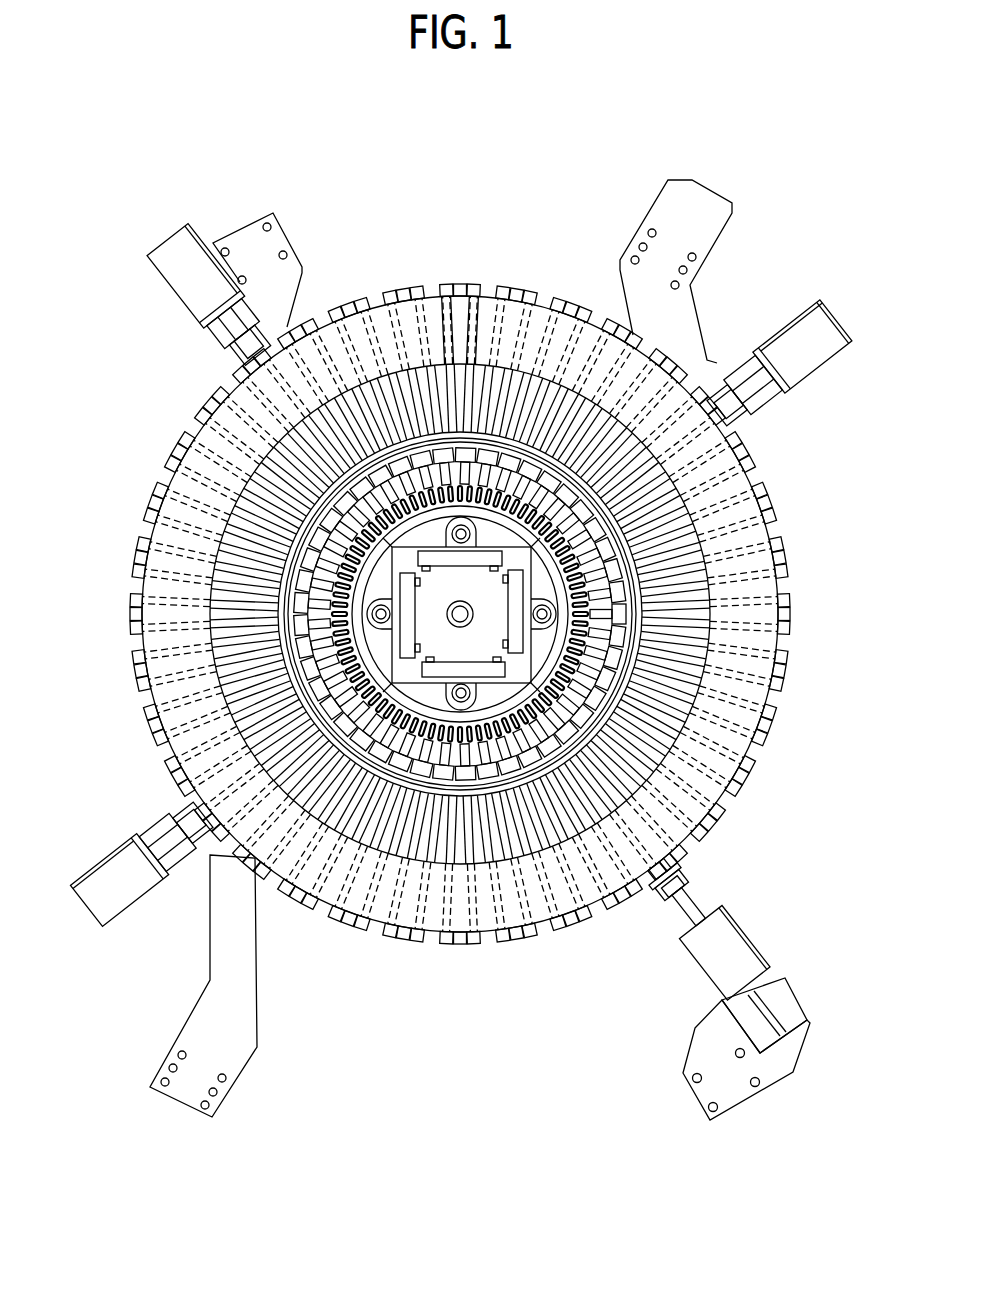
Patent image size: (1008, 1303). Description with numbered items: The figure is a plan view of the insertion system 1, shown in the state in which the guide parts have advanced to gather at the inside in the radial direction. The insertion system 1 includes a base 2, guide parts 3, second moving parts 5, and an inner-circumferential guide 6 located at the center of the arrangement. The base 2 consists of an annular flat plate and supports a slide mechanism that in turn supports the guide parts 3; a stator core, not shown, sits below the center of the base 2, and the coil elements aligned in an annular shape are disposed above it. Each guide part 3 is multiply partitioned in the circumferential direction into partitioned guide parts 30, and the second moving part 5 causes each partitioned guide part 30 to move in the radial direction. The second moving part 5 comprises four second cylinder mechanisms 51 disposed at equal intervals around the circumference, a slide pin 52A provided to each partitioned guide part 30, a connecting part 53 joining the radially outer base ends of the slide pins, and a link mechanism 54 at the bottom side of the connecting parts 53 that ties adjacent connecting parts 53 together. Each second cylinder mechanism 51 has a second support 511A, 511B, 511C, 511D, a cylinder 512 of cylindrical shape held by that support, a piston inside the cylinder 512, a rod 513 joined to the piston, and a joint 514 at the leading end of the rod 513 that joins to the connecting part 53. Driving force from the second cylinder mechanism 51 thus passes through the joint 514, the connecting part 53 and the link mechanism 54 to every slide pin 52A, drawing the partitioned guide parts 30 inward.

The insertion system 1 is at (682, 86).
The base 2 is at (486, 942).
The guide part 3 is at (612, 617).
The partitioned guide part 30 is at (582, 612).
The slide pin 52A is at (673, 660).
The inner-circumferential guide 6 is at (378, 585).
The second moving part 5 is at (473, 652).
The second cylinder mechanism 51 is at (467, 652).
The second support 511A is at (700, 205).
The second support 511B is at (738, 1097).
The second support 511C is at (243, 1050).
The second support 511D is at (250, 237).
The cylinder 512 is at (808, 330).
The rod 513 is at (755, 385).
The joint 514 is at (724, 410).
The connecting part 53 is at (668, 866).
The link mechanism 54 is at (672, 875).